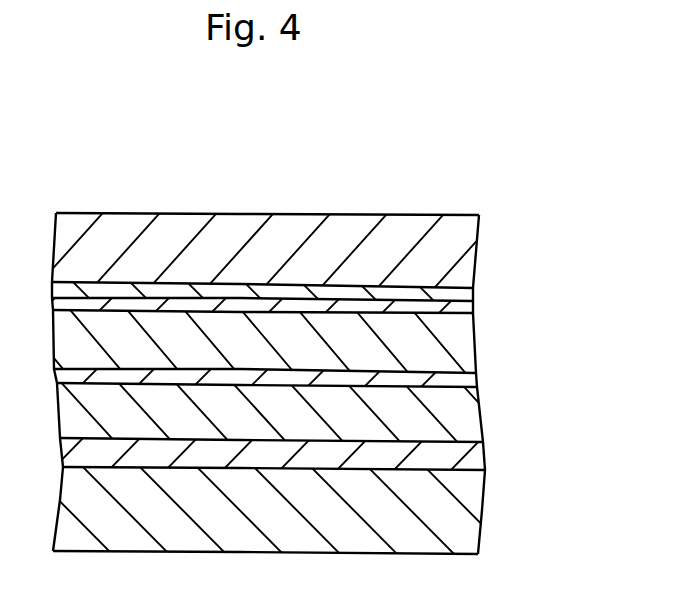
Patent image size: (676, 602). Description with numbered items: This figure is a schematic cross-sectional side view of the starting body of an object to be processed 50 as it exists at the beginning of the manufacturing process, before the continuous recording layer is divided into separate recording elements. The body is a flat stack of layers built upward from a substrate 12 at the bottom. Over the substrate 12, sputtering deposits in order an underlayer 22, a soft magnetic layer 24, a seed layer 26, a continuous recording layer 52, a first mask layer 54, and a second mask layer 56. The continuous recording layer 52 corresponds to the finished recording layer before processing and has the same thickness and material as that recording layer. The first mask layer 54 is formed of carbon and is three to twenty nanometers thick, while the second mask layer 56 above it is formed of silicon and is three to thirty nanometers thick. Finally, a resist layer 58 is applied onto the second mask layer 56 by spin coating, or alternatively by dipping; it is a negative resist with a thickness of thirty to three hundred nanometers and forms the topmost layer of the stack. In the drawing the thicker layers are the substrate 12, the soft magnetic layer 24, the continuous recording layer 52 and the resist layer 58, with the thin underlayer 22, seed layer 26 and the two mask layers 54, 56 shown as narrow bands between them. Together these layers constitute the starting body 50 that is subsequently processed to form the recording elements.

The starting body of an object to be processed 50 is at (305, 146).
The resist layer 58 is at (478, 231).
The second mask layer 56 is at (474, 297).
The first mask layer 54 is at (474, 308).
The continuous recording layer 52 is at (474, 350).
The seed layer 26 is at (478, 382).
The soft magnetic layer 24 is at (482, 410).
The underlayer 22 is at (484, 455).
The substrate 12 is at (484, 502).